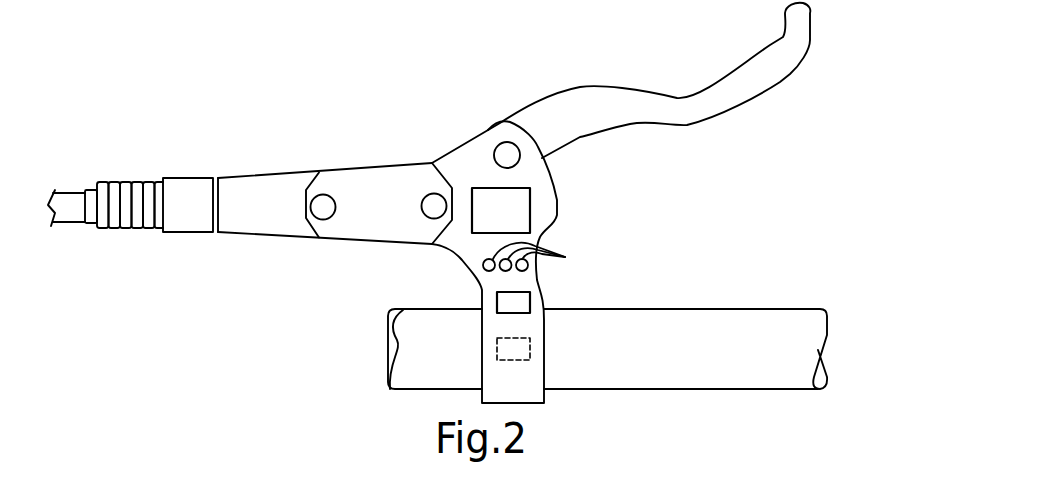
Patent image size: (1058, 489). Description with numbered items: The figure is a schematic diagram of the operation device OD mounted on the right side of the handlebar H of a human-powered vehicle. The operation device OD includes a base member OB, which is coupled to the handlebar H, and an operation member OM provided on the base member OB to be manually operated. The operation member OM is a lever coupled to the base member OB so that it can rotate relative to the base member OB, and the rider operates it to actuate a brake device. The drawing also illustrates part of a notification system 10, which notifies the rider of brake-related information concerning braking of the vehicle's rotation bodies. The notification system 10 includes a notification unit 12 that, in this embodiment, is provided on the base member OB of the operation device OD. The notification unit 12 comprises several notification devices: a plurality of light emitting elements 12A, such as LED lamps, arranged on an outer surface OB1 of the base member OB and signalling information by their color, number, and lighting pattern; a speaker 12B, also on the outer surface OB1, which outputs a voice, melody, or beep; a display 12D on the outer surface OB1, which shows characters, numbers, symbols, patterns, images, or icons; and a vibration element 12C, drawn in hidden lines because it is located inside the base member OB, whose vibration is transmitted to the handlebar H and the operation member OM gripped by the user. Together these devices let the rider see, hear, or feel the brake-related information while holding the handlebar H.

The notification system 10 is at (445, 117).
The notification unit 12 is at (527, 262).
The light emitting element 12A is at (565, 257).
The speaker 12B is at (531, 297).
The vibration element 12C is at (531, 349).
The display 12D is at (531, 210).
The base member OB is at (340, 202).
The outer surface OB1 is at (462, 243).
The operation device OD is at (429, 145).
The operation member OM is at (780, 83).
The handlebar H is at (733, 309).